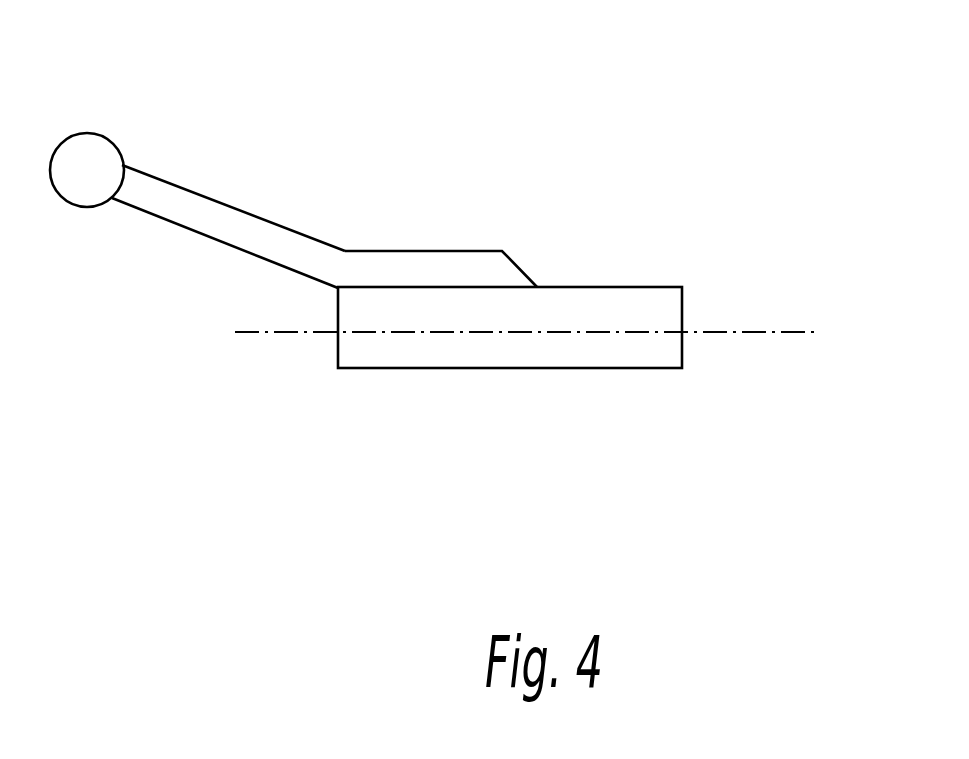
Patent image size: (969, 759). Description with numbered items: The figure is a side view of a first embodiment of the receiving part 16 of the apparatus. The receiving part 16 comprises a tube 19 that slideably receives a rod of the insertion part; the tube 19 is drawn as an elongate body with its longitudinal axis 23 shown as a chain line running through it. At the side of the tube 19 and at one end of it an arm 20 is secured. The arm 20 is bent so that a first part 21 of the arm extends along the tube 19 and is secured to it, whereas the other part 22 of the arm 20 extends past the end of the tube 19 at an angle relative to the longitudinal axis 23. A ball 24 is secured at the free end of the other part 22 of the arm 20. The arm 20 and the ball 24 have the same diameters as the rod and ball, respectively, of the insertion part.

The receiving part 16 is at (150, 409).
The tube 19 is at (638, 353).
The arm 20 is at (293, 228).
The first part of the arm 21 is at (438, 272).
The other part of the arm 22 is at (207, 220).
The longitudinal axis 23 is at (777, 331).
The ball 24 is at (90, 168).